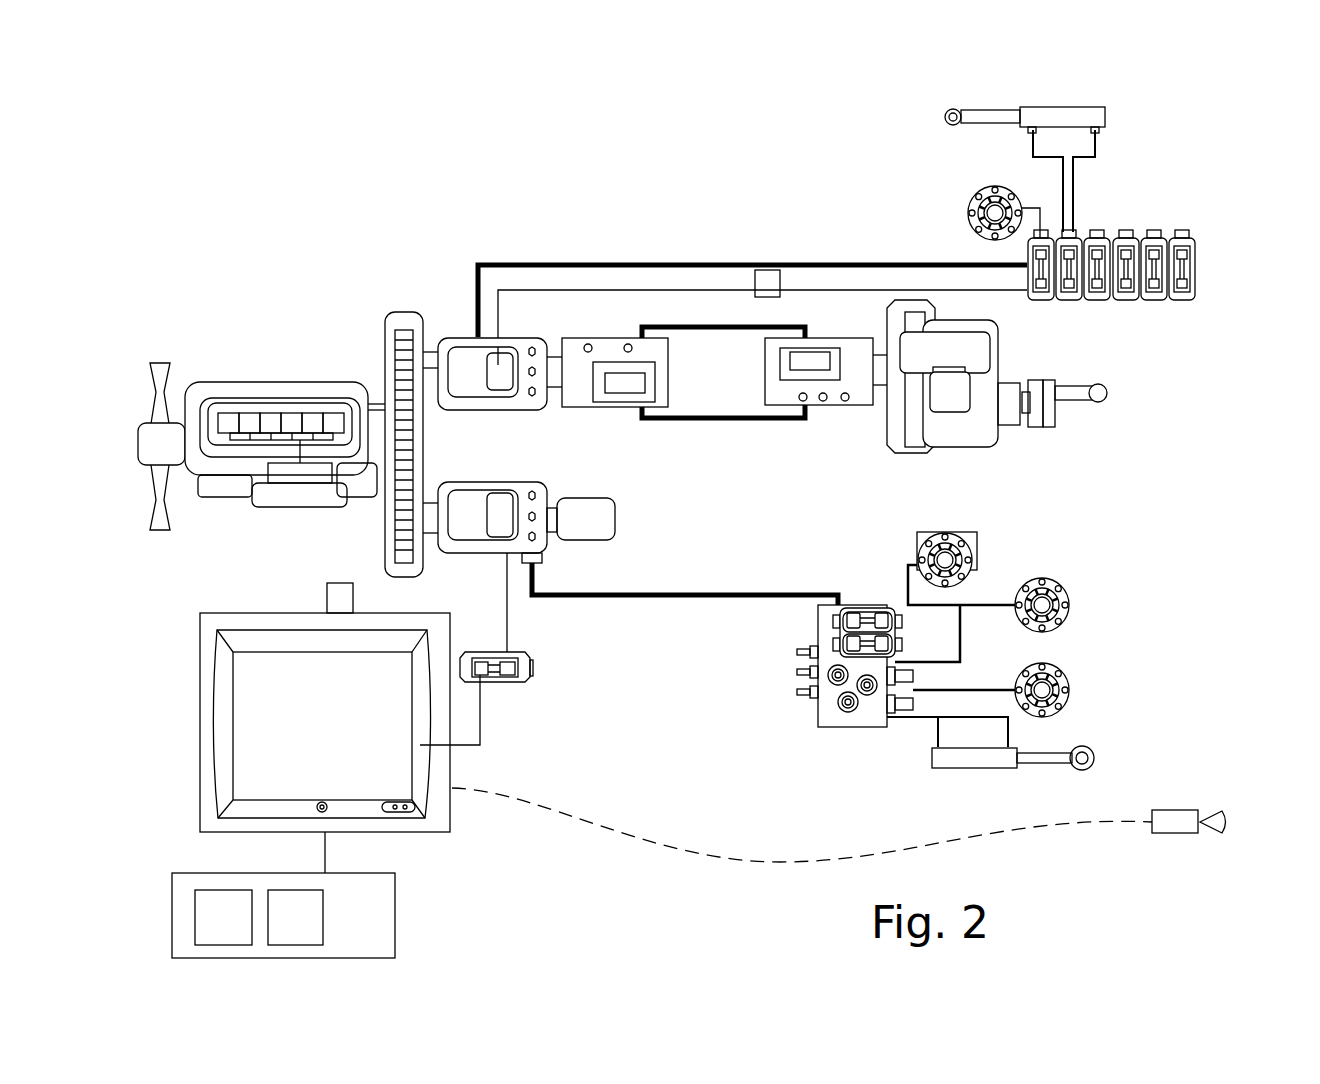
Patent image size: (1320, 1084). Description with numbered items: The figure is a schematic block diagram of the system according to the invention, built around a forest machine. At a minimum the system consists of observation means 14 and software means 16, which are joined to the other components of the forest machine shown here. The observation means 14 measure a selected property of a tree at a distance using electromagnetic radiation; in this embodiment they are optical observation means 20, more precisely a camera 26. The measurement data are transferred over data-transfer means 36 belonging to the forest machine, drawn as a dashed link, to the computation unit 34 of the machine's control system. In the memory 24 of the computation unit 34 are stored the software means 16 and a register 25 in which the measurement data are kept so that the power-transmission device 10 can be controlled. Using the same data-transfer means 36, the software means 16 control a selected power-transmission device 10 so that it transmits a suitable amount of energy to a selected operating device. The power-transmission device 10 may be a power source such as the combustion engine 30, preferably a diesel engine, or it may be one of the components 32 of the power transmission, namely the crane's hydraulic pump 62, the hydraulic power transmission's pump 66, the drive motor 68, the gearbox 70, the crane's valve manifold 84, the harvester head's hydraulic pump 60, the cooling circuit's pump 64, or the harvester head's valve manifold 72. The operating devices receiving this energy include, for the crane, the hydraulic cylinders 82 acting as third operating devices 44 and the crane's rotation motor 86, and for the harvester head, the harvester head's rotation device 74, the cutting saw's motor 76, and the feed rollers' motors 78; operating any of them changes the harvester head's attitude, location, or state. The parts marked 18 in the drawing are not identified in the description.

The power-transmission device 10 is at (280, 358).
The observation means 14 is at (1180, 800).
The software means 16 is at (281, 934).
The sensor 18 is at (951, 175).
The optical observation means 20 is at (1160, 840).
The memory 24 is at (349, 934).
The register 25 is at (210, 934).
The camera 26 is at (1182, 825).
The combustion engine 30 is at (317, 382).
The components of the power transmission 32 is at (1172, 312).
The computation unit 34 is at (200, 708).
The data-transfer means 36 is at (747, 863).
The third operating devices 44 is at (998, 100).
The harvester head's hydraulic pump 60 is at (978, 768).
The crane's hydraulic pump 62 is at (497, 397).
The cooling circuit's pump 64 is at (610, 517).
The hydraulic power transmission's pump 66 is at (602, 338).
The drive motor 68 is at (845, 402).
The gearbox 70 is at (988, 347).
The harvester head's valve manifold 72 is at (855, 727).
The harvester head's rotation device 74 is at (918, 552).
The cutting saw's motor 76 is at (1058, 625).
The feed rollers' motors 78 is at (1070, 688).
The hydraulic cylinders 82 is at (1058, 112).
The crane's valve manifold 84 is at (1197, 260).
The crane's rotation motor 86 is at (966, 212).